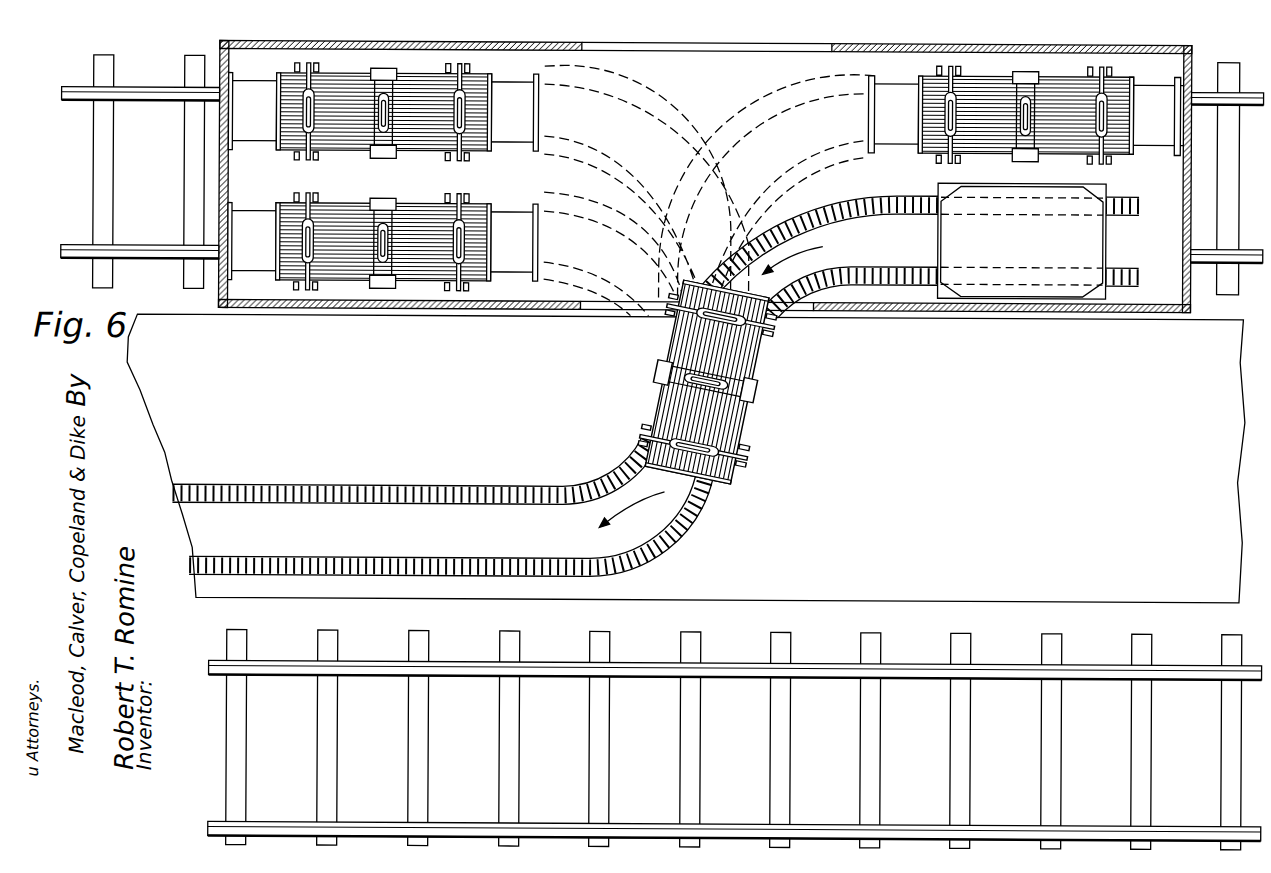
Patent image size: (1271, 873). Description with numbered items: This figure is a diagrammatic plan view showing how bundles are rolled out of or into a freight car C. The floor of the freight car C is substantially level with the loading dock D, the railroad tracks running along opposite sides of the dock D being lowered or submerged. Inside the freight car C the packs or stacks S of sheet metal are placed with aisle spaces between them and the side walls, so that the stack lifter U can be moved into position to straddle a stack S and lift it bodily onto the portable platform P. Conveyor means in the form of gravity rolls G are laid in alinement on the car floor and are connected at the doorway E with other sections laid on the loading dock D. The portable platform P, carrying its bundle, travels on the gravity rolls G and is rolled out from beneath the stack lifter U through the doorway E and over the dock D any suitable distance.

The stack S is at (476, 82).
The portable platform P is at (757, 367).
The doorway E is at (813, 305).
The gravity rolls G is at (237, 487).
The stack lifter U is at (1022, 275).
The freight car C is at (1138, 300).
The loading dock D is at (685, 458).